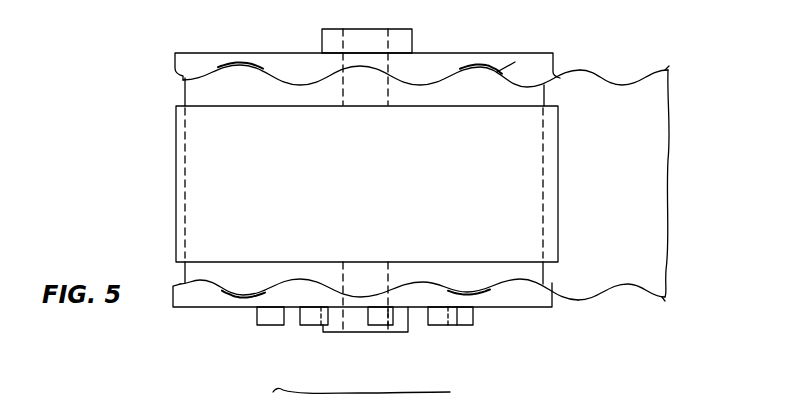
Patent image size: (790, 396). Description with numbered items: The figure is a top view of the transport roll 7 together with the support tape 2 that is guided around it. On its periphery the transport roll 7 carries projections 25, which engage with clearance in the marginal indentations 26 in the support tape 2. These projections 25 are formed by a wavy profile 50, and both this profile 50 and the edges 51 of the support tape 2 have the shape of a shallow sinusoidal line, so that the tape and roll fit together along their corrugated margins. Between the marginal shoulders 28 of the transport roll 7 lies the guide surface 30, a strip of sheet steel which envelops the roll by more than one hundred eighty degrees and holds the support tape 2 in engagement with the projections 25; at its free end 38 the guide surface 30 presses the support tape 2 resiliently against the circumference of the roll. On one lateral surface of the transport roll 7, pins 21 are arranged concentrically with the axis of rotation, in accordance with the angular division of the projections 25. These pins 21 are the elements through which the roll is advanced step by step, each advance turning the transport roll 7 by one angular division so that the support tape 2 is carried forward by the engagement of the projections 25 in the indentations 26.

The support tape 2 is at (658, 163).
The transport roll 7 is at (248, 53).
The pins 21 is at (393, 326).
The projections 25 is at (300, 83).
The marginal indentations 26 is at (622, 85).
The marginal shoulders 28 is at (487, 64).
The guide surface 30 is at (208, 175).
The free end 38 is at (556, 133).
The wavy profile 50 is at (497, 72).
The edges 51 is at (668, 70).